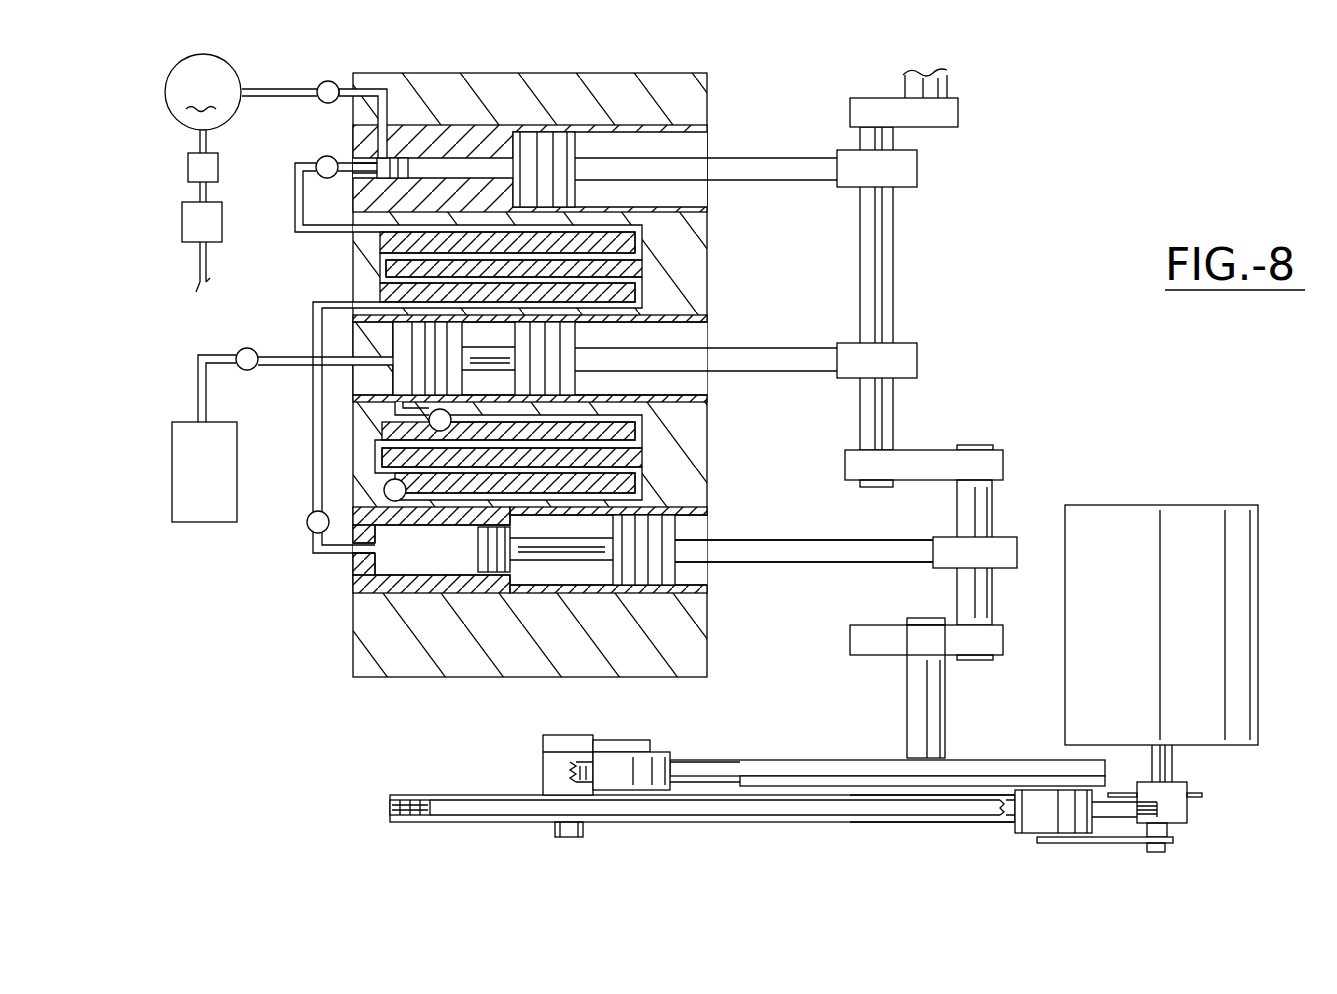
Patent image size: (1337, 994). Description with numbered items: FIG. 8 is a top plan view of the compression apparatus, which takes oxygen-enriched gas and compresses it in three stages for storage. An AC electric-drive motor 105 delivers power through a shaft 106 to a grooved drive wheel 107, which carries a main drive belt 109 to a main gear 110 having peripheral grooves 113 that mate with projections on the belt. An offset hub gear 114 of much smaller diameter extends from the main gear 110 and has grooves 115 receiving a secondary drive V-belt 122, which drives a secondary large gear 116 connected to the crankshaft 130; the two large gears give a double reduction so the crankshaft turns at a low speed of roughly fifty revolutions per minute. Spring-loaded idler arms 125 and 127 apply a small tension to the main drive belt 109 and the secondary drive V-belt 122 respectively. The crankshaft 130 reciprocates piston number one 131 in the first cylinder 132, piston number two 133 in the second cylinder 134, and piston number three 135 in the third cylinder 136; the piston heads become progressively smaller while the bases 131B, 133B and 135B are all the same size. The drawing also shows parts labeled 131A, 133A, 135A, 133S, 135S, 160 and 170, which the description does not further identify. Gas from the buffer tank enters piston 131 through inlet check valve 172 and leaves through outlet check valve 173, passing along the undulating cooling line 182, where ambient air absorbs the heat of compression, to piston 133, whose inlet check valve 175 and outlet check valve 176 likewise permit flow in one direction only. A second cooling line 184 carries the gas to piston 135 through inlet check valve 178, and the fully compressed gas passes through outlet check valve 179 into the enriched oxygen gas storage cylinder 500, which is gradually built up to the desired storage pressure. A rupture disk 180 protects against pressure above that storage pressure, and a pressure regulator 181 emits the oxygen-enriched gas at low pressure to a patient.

The enriched oxygen gas storage cylinder 500 is at (203, 173).
The outlet check valve 179 is at (321, 84).
The inlet check valve 178 is at (320, 157).
The rupture disk 180 is at (188, 170).
The pressure regulator 181 is at (182, 217).
The small bore of cylinder 135 135S is at (363, 192).
The small piston of cylinder 135 135A is at (403, 158).
The base of piston #3 135B is at (553, 132).
The piston #3 135 is at (534, 148).
The third cylinder 136 is at (707, 203).
The crankshaft 130 is at (895, 270).
The first piston of cylinder 131 131A is at (425, 322).
The base of piston #1 131B is at (572, 340).
The piston #1 131 is at (547, 333).
The first cylinder 132 is at (707, 392).
The inlet check valve 172 is at (250, 347).
The outlet check valve 173 is at (429, 421).
The cooling line 184 is at (313, 453).
The inlet check valve 175 is at (384, 487).
The outlet check valve 176 is at (307, 520).
The reservoir 170 is at (207, 522).
The cooling line 182 is at (645, 418).
The inlet of cylinder 133 133S is at (353, 583).
The small piston of cylinder 133 133A is at (500, 573).
The base of piston #2 133B is at (643, 585).
The piston #2 133 is at (596, 572).
The second cylinder 134 is at (707, 578).
The piston rod 160 is at (835, 548).
The secondary drive V-belt 122 is at (962, 770).
The secondary large gear 116 is at (1000, 782).
The AC electric-drive motor 105 is at (1243, 712).
The shaft 106 is at (1195, 782).
The drive wheel 107 is at (1195, 800).
The spring-loaded idler arm 127 is at (610, 740).
The offset hub gear 114 is at (543, 745).
The grooves 115 is at (575, 765).
The grooves 113 is at (390, 805).
The main gear 110 is at (448, 822).
The main drive belt 109 is at (850, 822).
The spring-loaded idler arm 125 is at (1105, 843).